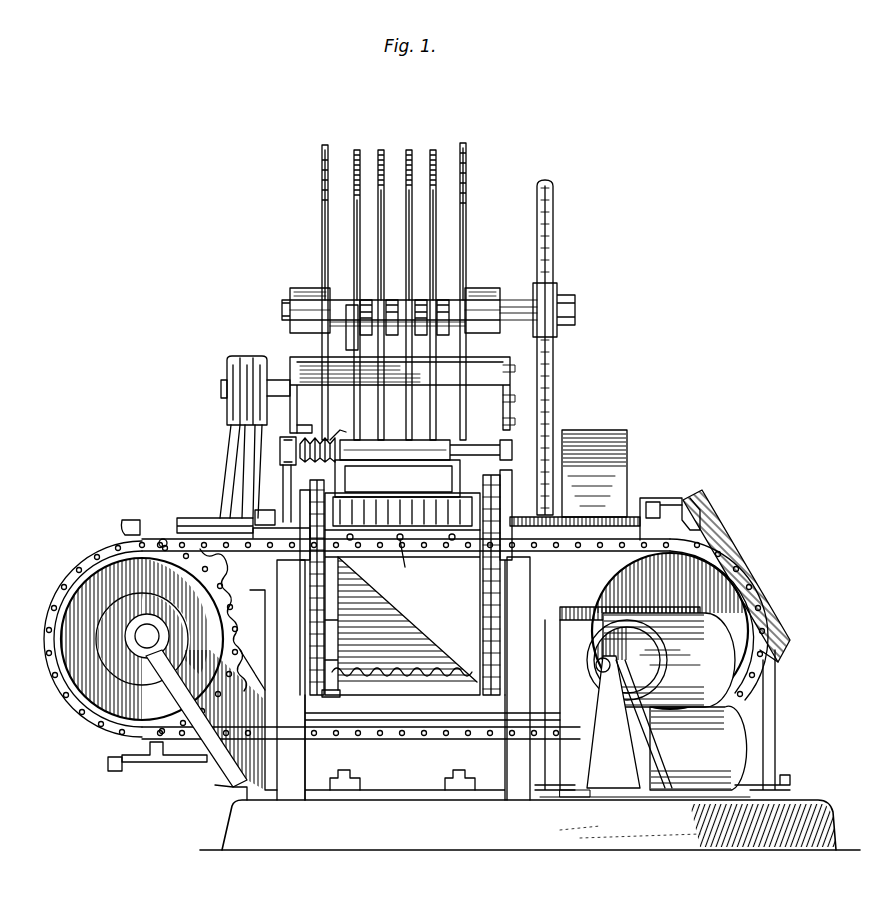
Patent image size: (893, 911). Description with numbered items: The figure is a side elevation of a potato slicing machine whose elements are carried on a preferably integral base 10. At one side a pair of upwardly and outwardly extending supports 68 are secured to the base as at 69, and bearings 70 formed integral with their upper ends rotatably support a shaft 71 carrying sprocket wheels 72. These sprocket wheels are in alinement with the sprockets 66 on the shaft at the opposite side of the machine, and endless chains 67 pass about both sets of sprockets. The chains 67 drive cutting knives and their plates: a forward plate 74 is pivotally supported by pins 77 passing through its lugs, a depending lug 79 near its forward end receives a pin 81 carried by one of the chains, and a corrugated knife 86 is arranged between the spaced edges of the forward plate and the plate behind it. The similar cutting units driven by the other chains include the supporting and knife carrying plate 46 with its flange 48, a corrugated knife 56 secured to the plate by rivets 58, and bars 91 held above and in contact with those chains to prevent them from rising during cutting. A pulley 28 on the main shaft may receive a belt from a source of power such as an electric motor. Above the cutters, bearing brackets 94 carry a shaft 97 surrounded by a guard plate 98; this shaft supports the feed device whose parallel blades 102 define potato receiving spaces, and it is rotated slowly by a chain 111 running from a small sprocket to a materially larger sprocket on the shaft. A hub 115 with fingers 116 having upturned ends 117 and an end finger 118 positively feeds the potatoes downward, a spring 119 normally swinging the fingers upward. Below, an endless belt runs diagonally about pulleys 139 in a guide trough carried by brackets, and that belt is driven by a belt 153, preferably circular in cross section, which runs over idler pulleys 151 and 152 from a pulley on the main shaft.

The base 10 is at (495, 825).
The pulley 28 is at (605, 432).
The supporting and knife carrying plate 46 is at (430, 600).
The flange 48 is at (330, 693).
The cutting member or knife 56 is at (452, 540).
The rivets 58 is at (413, 562).
The sprockets 66 is at (728, 595).
The endless chains 67 is at (705, 525).
The supports 68 is at (225, 745).
The securing point of supports 69 is at (230, 784).
The bearings 70 is at (150, 630).
The shaft 71 is at (160, 632).
The sprocket wheels 72 is at (107, 548).
The forward plate 74 is at (208, 518).
The pins 77 is at (655, 496).
The depending lug 79 is at (135, 520).
The pin 81 is at (164, 537).
The corrugated knife 86 is at (283, 511).
The bars 91 is at (324, 490).
The bearing brackets 94 is at (290, 347).
The shaft 97 is at (575, 312).
The guard plate 98 is at (322, 165).
The blades 102 is at (408, 150).
The chain 111 is at (553, 384).
The hub 115 is at (398, 457).
The fingers 116 is at (400, 358).
The upturned ends 117 is at (421, 300).
The finger 118 is at (350, 305).
The spring 119 is at (315, 437).
The pulleys 139 is at (622, 712).
The idler pulley 151 is at (244, 457).
The idler pulley 152 is at (236, 440).
The belt 153 is at (254, 476).